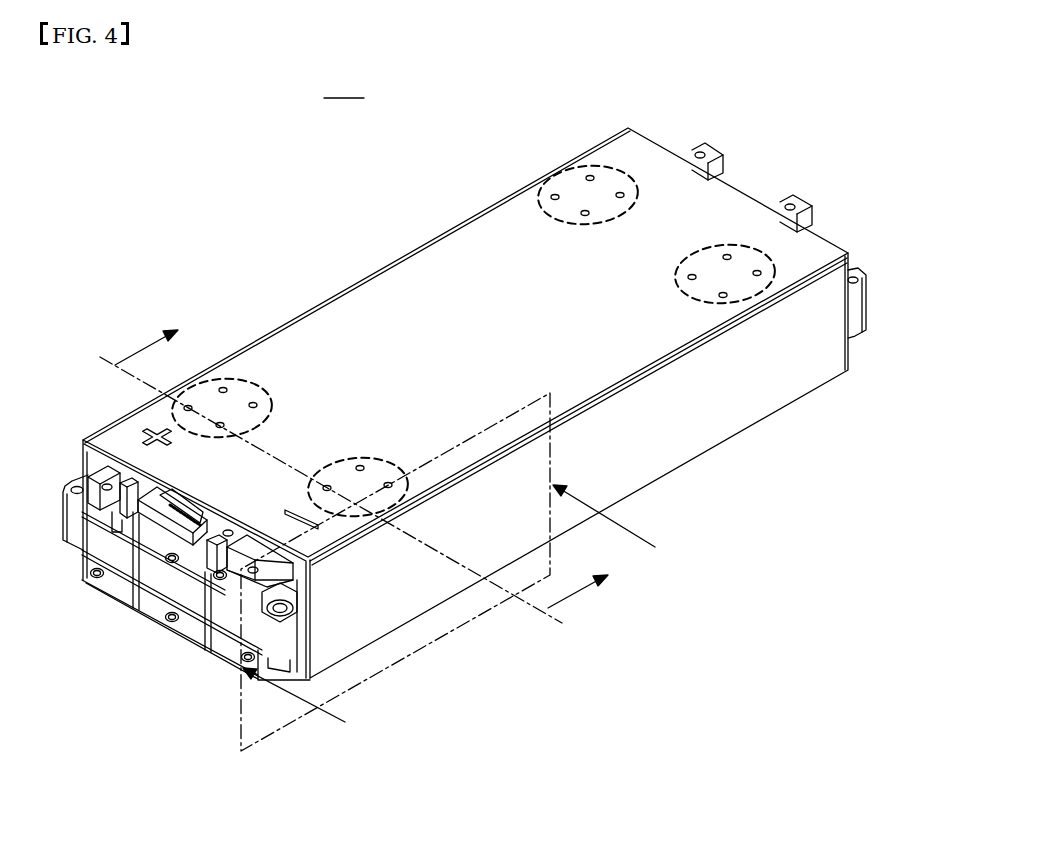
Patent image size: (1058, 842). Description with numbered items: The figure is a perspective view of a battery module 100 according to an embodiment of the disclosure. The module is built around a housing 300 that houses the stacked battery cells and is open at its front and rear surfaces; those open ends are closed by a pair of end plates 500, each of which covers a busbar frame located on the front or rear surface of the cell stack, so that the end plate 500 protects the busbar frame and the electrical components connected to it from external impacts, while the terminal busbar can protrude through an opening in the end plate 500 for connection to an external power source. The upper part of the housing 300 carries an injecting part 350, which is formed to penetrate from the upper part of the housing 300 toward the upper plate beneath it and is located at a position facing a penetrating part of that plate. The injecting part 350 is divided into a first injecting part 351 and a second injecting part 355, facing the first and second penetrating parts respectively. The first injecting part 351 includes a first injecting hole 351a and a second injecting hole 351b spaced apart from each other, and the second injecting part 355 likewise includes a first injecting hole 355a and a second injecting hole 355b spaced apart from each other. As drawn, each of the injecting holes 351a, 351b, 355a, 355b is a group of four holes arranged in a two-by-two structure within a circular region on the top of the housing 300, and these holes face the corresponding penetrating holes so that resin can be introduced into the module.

The battery module 100 is at (512, 405).
The housing 300 is at (672, 442).
The injecting part 350 is at (905, 445).
The first injecting part 351 is at (319, 208).
The first injecting hole 351a is at (232, 378).
The second injecting hole 351b is at (360, 458).
The second injecting part 355 is at (818, 128).
The first injecting hole 355a is at (607, 168).
The second injecting hole 355b is at (720, 247).
The end plate 500 is at (158, 605).